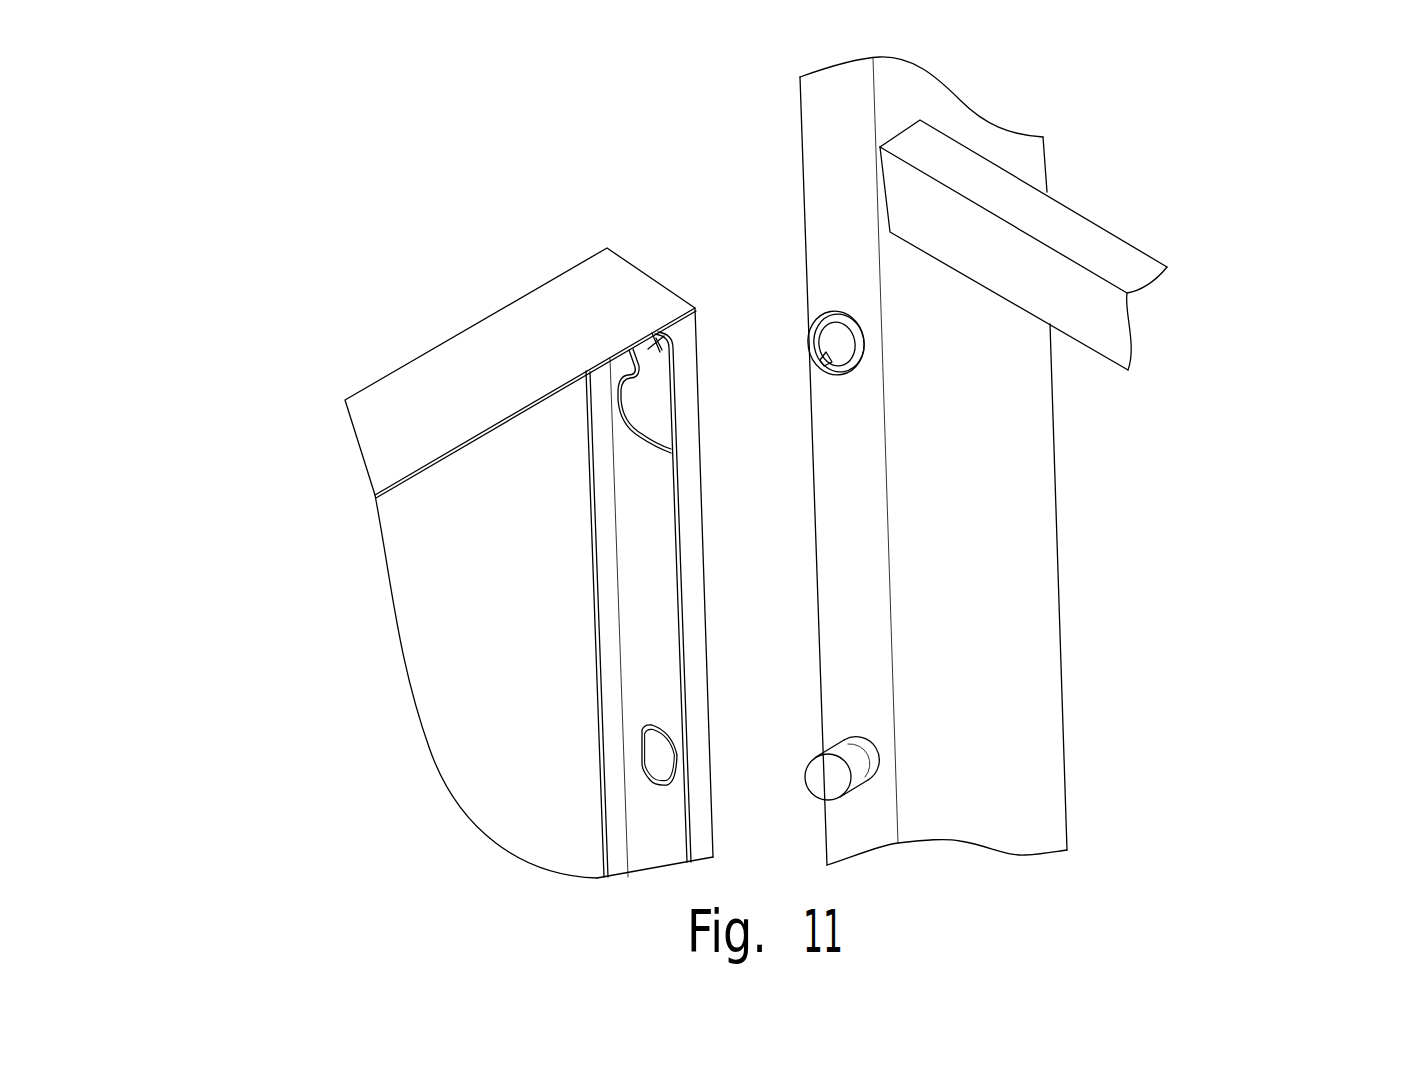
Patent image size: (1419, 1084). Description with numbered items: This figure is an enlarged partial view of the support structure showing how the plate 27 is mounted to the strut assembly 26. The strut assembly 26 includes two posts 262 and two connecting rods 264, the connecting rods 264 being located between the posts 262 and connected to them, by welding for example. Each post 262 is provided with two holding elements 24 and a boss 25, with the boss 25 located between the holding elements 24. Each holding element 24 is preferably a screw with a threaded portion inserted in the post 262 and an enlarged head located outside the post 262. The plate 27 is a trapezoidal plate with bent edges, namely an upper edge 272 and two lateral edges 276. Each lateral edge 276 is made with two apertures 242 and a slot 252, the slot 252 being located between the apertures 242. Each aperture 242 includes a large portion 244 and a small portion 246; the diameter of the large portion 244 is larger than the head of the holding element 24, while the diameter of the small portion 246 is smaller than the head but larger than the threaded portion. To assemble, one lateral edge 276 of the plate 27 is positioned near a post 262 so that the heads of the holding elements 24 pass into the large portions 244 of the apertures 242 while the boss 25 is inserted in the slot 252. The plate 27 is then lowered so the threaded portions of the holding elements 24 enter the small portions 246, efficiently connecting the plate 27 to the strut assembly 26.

The holding element 24 is at (838, 345).
The aperture 242 is at (707, 102).
The large portion 244 is at (652, 417).
The small portion 246 is at (652, 352).
The boss 25 is at (858, 757).
The slot 252 is at (655, 758).
The strut assembly 26 is at (1337, 225).
The post 262 is at (997, 383).
The connecting rod 264 is at (1053, 228).
The plate 27 is at (193, 502).
The upper edge 272 is at (450, 422).
The lateral edge 276 is at (648, 617).